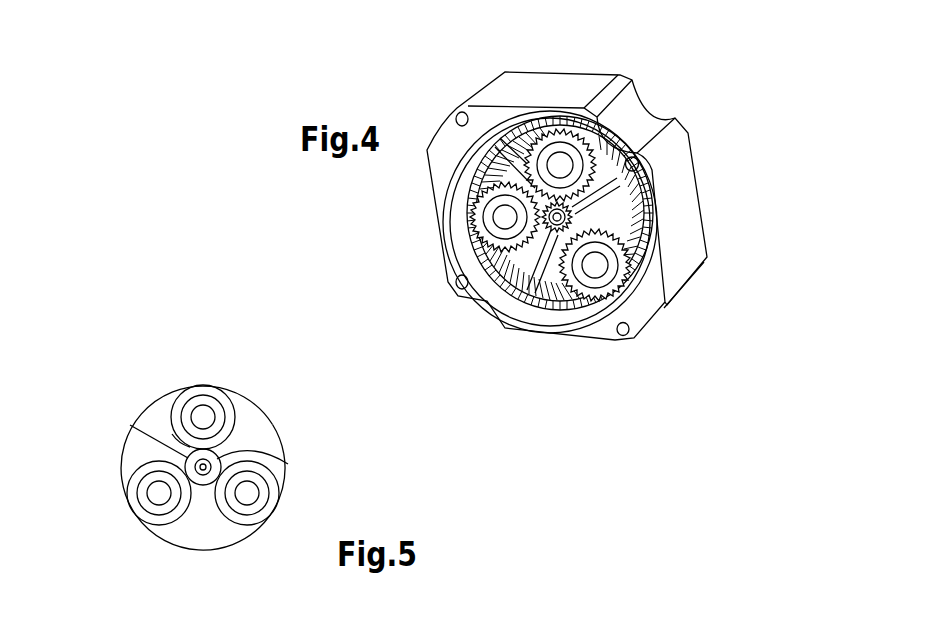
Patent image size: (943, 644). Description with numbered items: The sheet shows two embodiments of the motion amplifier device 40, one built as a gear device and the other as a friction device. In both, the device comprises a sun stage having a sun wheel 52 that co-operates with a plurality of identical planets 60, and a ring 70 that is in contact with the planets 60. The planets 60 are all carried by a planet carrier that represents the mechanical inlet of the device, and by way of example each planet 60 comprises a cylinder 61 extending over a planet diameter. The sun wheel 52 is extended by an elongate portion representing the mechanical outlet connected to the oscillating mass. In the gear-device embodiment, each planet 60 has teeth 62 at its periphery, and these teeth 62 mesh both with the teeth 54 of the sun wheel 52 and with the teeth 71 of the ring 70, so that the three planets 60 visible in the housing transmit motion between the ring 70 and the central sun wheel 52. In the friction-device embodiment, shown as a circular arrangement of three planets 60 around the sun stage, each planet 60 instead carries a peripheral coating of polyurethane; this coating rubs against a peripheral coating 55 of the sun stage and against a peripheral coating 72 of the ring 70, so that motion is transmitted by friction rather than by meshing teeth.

In FIG. 4, the motion amplifier device 40 is at (448, 80).
In FIG. 5, the motion amplifier device 40 is at (110, 513).
In FIG. 4, the sun wheel 52 is at (525, 285).
In FIG. 5, the sun wheel 52 is at (287, 467).
In FIG. 4, the teeth of the sun wheel 54 is at (608, 207).
In FIG. 5, the peripheral coating of the sun stage 55 is at (130, 426).
In FIG. 4, the planet 60 is at (558, 150).
In FIG. 5, the planet 60 is at (203, 400).
In FIG. 4, the cylinder 61 is at (531, 94).
In FIG. 5, the cylinder 61 is at (146, 399).
In FIG. 4, the teeth of the planet 62 is at (510, 163).
In FIG. 5, the teeth of the planet 62 is at (168, 422).
In FIG. 4, the ring 70 is at (550, 252).
In FIG. 5, the ring 70 is at (283, 437).
In FIG. 4, the teeth of the ring 71 is at (541, 306).
In FIG. 5, the peripheral coating of the ring 72 is at (259, 422).